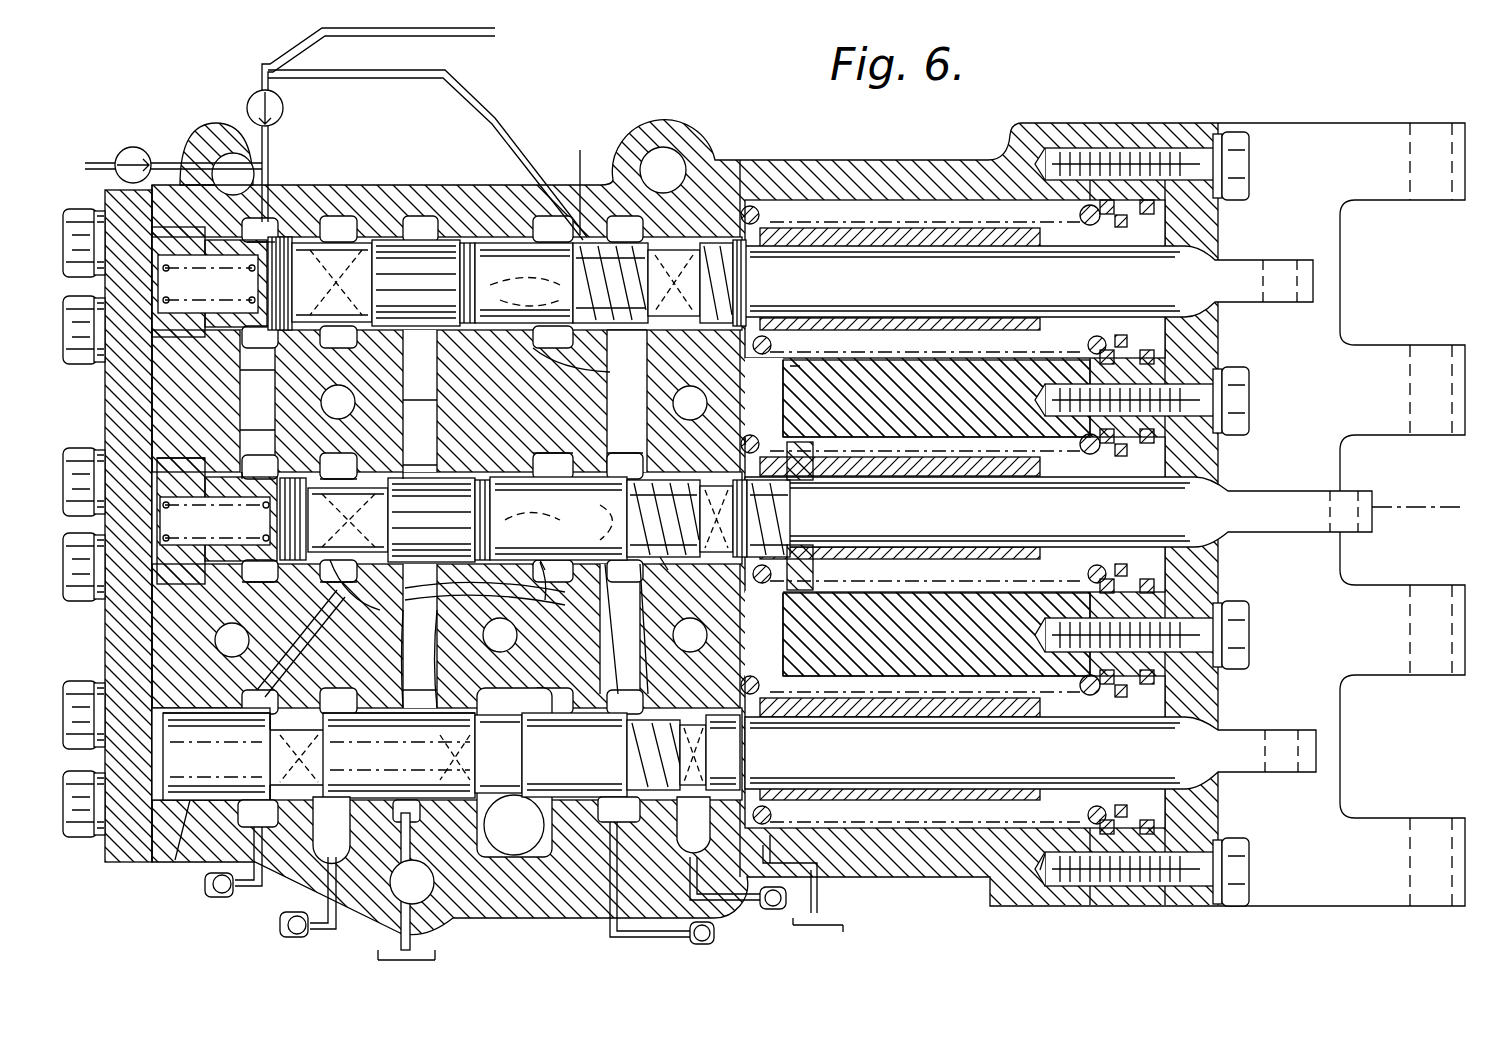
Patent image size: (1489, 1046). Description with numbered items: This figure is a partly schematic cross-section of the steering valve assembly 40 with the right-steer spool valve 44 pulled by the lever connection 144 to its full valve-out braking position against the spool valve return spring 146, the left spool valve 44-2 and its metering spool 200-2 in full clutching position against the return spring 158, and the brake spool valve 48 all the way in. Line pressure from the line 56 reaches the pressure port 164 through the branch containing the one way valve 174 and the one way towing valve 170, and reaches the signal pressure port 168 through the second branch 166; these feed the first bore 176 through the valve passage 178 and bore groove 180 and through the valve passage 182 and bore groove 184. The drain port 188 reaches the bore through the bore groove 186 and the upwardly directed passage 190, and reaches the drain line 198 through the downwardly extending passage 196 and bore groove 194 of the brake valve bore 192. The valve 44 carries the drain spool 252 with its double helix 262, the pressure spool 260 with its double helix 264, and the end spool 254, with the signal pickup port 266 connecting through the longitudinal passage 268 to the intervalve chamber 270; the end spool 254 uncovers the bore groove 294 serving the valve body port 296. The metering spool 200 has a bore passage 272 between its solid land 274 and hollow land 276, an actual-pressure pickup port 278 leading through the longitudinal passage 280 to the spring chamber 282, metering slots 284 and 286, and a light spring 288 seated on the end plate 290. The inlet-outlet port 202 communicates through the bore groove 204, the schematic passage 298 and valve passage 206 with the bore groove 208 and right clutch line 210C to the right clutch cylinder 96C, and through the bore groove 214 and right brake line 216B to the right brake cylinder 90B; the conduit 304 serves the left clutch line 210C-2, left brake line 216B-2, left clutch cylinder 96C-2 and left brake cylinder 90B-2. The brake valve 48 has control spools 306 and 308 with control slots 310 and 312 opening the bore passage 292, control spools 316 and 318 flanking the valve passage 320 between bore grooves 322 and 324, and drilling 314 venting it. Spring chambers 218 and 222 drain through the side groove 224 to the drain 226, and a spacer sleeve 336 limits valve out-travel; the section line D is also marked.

The steering valve assembly 40 is at (785, 527).
The spool valve 44 is at (1230, 492).
The left spool valve 44-2 is at (1195, 267).
The brake spool valve 48 is at (1232, 740).
The line 56 is at (266, 52).
The right brake cylinder 90B is at (285, 938).
The left brake cylinder 90B-2 is at (760, 905).
The right clutch cylinder 96C is at (205, 888).
The left clutch cylinder 96C-2 is at (704, 945).
The lever connection 144 is at (1393, 505).
The spool valve return spring 146 is at (823, 455).
The spool valve return spring 158 is at (1092, 148).
The pressure port 164 is at (272, 222).
The second branch 166 is at (505, 118).
The signal pressure port 168 is at (573, 177).
The one way towing valve 170 is at (133, 147).
The one way valve 174 is at (247, 100).
The first bore 176 is at (245, 430).
The valve passage 178 is at (250, 370).
The bore groove 180 is at (255, 578).
The valve passage 182 is at (640, 356).
The bore groove 184 is at (640, 470).
The bore groove 186 is at (437, 465).
The drain port 188 is at (432, 586).
The upwardly directed passage 190 is at (437, 400).
The brake valve bore 192 is at (190, 800).
The bore groove 194 is at (422, 672).
The downwardly extending passage 196 is at (412, 682).
The drain line 198 is at (432, 838).
The metering spool 200 is at (330, 565).
The metering spool 200-2 is at (328, 262).
The inlet-outlet port 202 is at (335, 455).
The bore groove 204 is at (358, 475).
The valve passage 206 is at (280, 670).
The bore groove 208 is at (216, 726).
The right clutch line 210C is at (258, 890).
The left clutch line 210C-2 is at (612, 912).
The bore groove 214 is at (330, 690).
The right brake line 216B is at (338, 928).
The left brake line 216B-2 is at (752, 905).
The spring chamber 218 is at (985, 450).
The spring chamber 222 is at (965, 675).
The side groove 224 is at (790, 636).
The drain 226 is at (822, 900).
The drain spool 252 is at (748, 490).
The end spool 254 is at (628, 450).
The pressure spool 260 is at (715, 450).
The double helix 262 is at (767, 537).
The double helix 264 is at (667, 552).
The signal pickup port 266 is at (748, 440).
The longitudinal passage 268 is at (545, 565).
The intervalve chamber 270 is at (508, 462).
The bore passage 272 is at (368, 490).
The solid land 274 is at (412, 470).
The hollow land 276 is at (262, 478).
The actual-pressure pickup port 278 is at (343, 590).
The longitudinal passage 280 is at (280, 522).
The spring chamber 282 is at (262, 250).
The metering slots 284 is at (400, 535).
The metering slots 286 is at (292, 495).
The light spring 288 is at (160, 470).
The end plate 290 is at (118, 866).
The bore passage 292 is at (399, 728).
The bore groove 294 is at (548, 600).
The valve body port 296 is at (491, 381).
The passage 298 is at (512, 595).
The conduit 304 is at (540, 392).
The control spool 306 is at (250, 805).
The control spool 308 is at (402, 805).
The control slots 310 is at (237, 754).
The control slots 312 is at (399, 755).
The drilling 314 is at (333, 830).
The control spool 316 is at (513, 772).
The control spool 318 is at (708, 700).
The valve passage 320 is at (622, 700).
The bore groove 322 is at (610, 795).
The bore groove 324 is at (690, 830).
The spacer sleeve 336 is at (967, 797).
The section line D is at (630, 939).